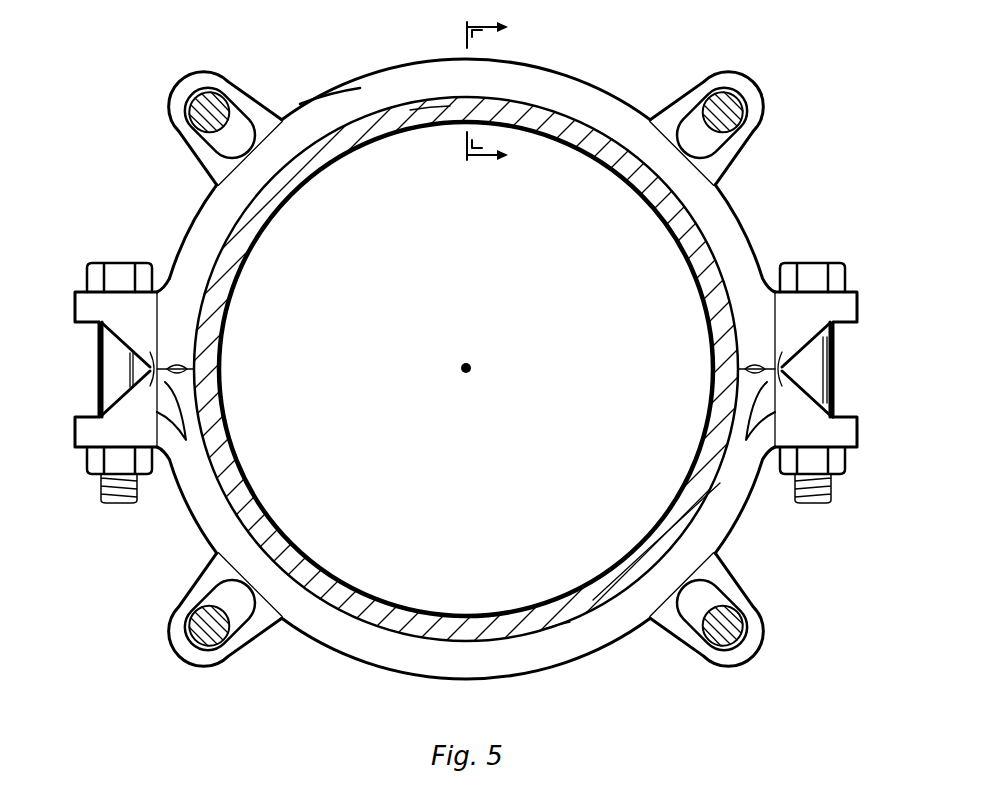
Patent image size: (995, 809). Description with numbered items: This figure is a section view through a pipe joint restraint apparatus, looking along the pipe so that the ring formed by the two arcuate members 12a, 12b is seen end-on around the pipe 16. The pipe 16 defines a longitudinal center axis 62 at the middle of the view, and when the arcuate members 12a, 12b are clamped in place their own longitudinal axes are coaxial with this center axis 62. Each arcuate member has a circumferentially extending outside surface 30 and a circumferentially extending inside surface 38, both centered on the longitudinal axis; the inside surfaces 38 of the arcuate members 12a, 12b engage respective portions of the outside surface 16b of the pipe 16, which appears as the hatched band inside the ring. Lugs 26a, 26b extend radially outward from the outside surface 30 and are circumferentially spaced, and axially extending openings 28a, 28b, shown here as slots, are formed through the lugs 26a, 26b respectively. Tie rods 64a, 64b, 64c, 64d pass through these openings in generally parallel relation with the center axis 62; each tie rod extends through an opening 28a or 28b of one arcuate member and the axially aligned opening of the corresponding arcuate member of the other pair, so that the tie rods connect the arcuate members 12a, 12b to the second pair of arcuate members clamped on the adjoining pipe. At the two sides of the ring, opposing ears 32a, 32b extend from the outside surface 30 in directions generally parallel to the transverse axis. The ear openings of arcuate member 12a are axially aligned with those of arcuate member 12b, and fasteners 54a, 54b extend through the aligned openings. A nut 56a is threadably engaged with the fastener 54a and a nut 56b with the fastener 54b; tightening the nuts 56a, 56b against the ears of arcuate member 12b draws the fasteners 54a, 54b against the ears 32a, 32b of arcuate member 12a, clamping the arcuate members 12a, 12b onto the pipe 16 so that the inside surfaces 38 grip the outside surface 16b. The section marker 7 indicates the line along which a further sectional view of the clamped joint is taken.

The section line 7- 7 is at (497, 91).
The arcuate member 12a is at (566, 72).
The arcuate member 12b is at (362, 668).
The pipe 16 is at (338, 595).
The outside surface of the pipe 16b is at (338, 121).
The lug 26a is at (767, 116).
The lug 26b is at (165, 117).
The opening 28a is at (690, 158).
The opening 28b is at (235, 160).
The outside surface 30 is at (390, 96).
The ear 32a is at (857, 300).
The ear 32b is at (78, 303).
The inside surface 38 is at (420, 104).
The fastener 54a is at (833, 367).
The fastener 54b is at (98, 367).
The nut 56a is at (847, 462).
The nut 56b is at (88, 458).
The longitudinal center axis 62 is at (463, 364).
The tie rod 64a is at (744, 93).
The tie rod 64b is at (737, 648).
The tie rod 64c is at (196, 86).
The tie rod 64d is at (192, 647).